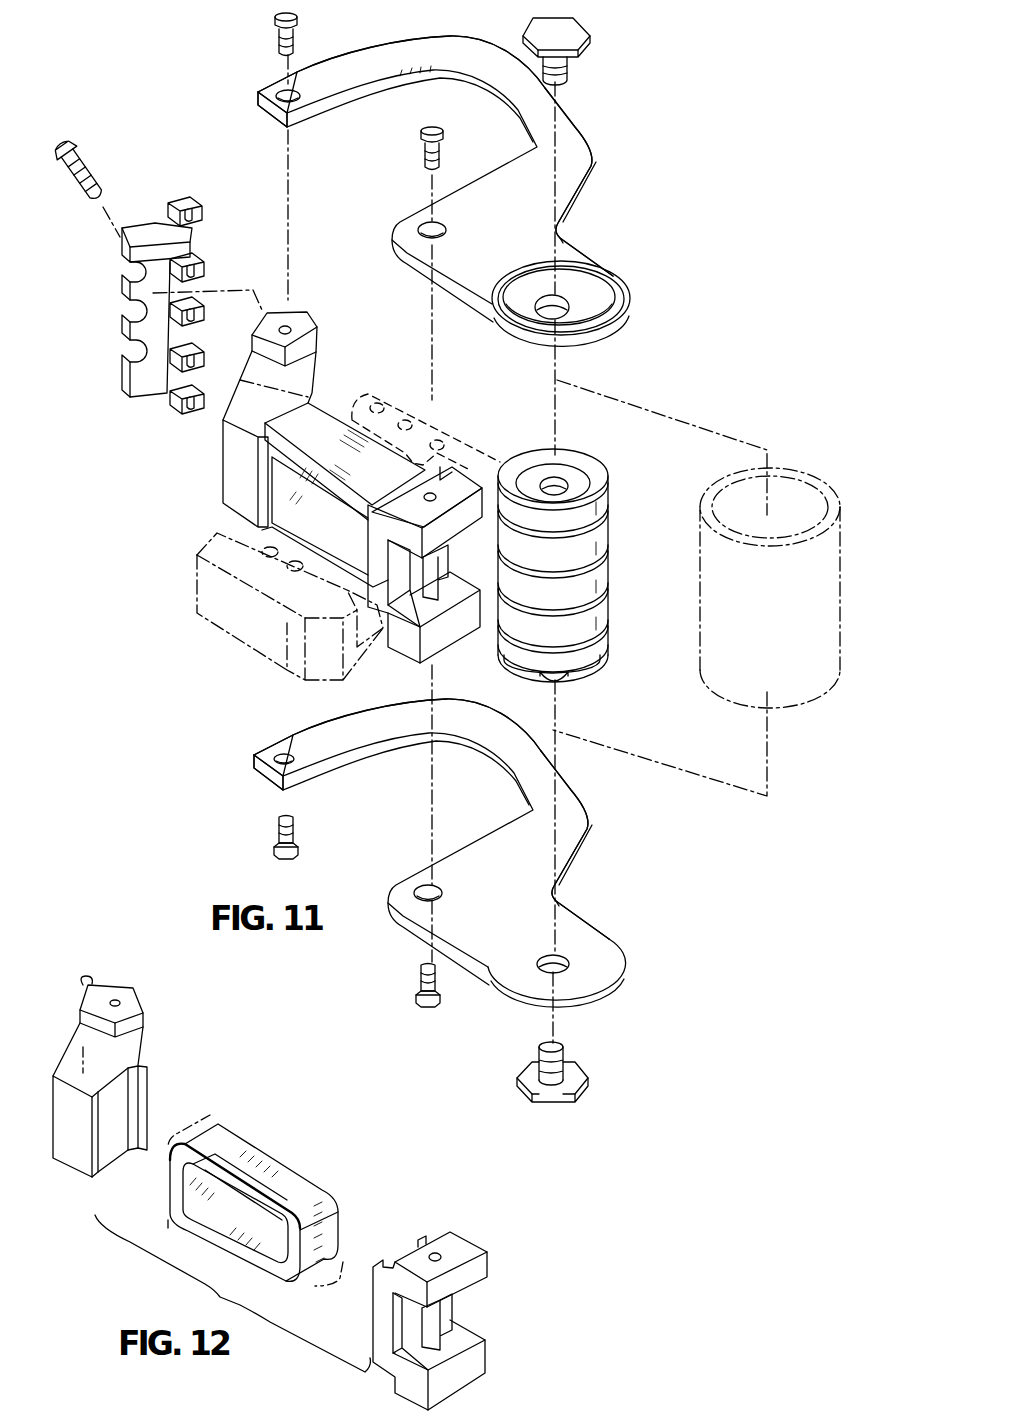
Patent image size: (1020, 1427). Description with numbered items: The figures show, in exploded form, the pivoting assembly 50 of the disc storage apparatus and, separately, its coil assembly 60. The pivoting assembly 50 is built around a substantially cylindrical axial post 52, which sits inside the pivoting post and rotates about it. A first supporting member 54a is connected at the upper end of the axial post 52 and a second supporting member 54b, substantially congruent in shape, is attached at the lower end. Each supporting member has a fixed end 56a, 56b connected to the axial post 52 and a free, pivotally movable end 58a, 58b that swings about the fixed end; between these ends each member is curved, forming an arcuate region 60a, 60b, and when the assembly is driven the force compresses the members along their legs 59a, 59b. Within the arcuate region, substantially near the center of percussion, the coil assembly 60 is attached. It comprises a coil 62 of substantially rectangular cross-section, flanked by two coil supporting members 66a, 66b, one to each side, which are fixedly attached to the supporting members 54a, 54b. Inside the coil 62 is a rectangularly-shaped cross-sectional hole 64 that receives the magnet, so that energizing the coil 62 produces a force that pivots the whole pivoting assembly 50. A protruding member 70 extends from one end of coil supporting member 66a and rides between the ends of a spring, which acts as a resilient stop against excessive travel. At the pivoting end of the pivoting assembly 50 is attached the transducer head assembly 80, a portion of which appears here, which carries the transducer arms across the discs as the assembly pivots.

In FIG. 11, the pivoting assembly 50 is at (397, 321).
In FIG. 11, the axial post 52 is at (610, 543).
In FIG. 11, the first supporting member 54a is at (531, 232).
In FIG. 11, the second supporting member 54b is at (537, 937).
In FIG. 11, the fixed end of first supporting member 56a is at (598, 290).
In FIG. 11, the fixed end of second supporting member 56b is at (603, 941).
In FIG. 11, the pivotally movable end of first supporting member 58a is at (258, 95).
In FIG. 11, the pivotally movable end of second supporting member 58b is at (254, 767).
In FIG. 11, the leg of first supporting member 59a is at (396, 44).
In FIG. 11, the leg of second supporting member 59b is at (327, 723).
In FIG. 11, the arcuate region of first supporting member 60a is at (562, 107).
In FIG. 11, the arcuate region of second supporting member 60b is at (562, 785).
In FIG. 12, the coil assembly 60 is at (242, 1188).
In FIG. 12, the coil 62 is at (297, 1178).
In FIG. 12, the rectangularly-shaped cross-sectional hole 64 is at (193, 1198).
In FIG. 12, the coil supporting member 66a is at (453, 1303).
In FIG. 12, the coil supporting member 66b is at (147, 1031).
In FIG. 12, the protruding member 70 is at (447, 1313).
In FIG. 11, the transducer head assembly 80 is at (106, 323).